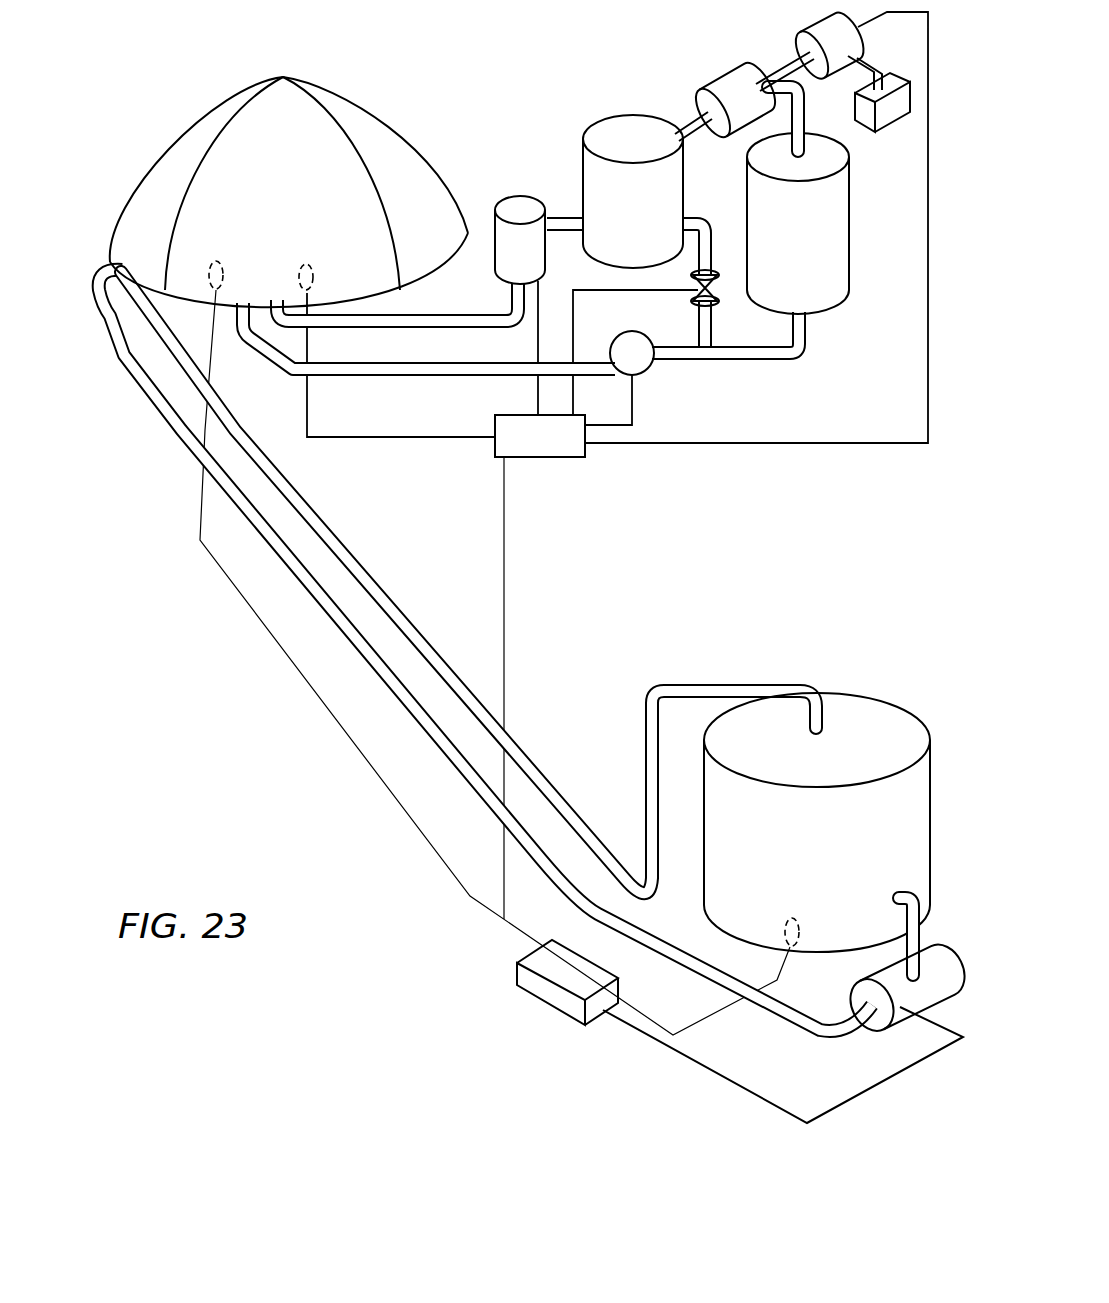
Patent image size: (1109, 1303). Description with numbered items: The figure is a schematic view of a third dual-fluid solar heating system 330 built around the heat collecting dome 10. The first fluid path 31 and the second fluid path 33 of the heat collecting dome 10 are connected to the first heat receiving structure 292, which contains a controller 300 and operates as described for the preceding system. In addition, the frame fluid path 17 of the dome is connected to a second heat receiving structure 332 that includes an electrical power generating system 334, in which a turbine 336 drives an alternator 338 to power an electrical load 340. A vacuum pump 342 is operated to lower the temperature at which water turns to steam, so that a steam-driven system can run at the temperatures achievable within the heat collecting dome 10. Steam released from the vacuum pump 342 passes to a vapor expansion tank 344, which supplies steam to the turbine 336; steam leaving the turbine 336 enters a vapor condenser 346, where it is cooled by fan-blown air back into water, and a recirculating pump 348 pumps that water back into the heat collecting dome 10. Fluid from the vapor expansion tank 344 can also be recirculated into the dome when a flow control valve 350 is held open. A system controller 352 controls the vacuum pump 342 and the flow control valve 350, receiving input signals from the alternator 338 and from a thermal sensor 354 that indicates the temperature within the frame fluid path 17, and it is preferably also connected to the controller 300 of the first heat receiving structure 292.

The heat collecting dome 10 is at (176, 112).
The frame fluid path 17 is at (280, 343).
The first fluid path 31 is at (150, 309).
The second fluid path 33 is at (90, 267).
The first heat receiving structure 292 is at (722, 652).
The controller 300 is at (558, 1010).
The dual-fluid solar heating system 330 is at (134, 434).
The second heat receiving structure 332 is at (707, 484).
The electrical power generating system 334 is at (592, 87).
The turbine 336 is at (717, 83).
The alternator 338 is at (788, 52).
The electrical load 340 is at (893, 133).
The vacuum pump 342 is at (522, 197).
The vapor expansion tank 344 is at (640, 107).
The vapor condenser 346 is at (850, 228).
The recirculating pump 348 is at (638, 372).
The flow control valve 350 is at (717, 293).
The system controller 352 is at (526, 460).
The thermal sensor 354 is at (310, 268).